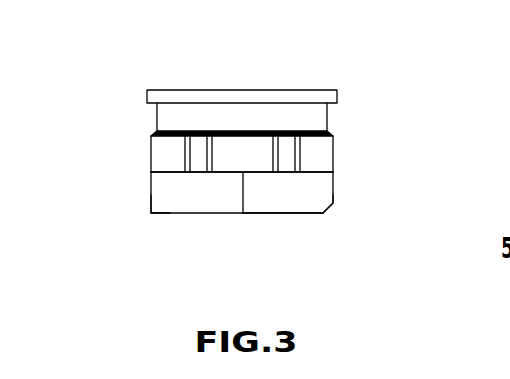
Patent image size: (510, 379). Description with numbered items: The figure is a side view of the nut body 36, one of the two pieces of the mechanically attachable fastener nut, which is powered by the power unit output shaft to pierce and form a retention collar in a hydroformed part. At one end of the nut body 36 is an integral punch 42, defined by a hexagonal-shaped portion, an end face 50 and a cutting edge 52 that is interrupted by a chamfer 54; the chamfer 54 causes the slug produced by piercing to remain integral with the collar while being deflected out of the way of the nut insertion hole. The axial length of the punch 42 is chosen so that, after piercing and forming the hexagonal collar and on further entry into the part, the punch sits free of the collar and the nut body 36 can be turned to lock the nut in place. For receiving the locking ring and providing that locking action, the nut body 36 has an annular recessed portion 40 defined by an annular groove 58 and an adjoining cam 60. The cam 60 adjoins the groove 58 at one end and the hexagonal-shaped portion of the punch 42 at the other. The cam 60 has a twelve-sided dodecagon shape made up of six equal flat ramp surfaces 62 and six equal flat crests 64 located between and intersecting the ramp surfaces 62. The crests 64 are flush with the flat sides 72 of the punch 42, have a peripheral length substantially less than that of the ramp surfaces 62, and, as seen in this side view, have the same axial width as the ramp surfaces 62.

The nut body 36 is at (341, 72).
The annular recessed portion 40 is at (141, 113).
The annular groove 58 is at (328, 117).
The cam 60 is at (346, 144).
The flat ramp surfaces 62 is at (245, 150).
The flat crests 64 is at (199, 150).
The integral punch 42 is at (167, 201).
The flat sides 72 is at (199, 195).
The cutting edge 52 is at (151, 214).
The end face 50 is at (275, 214).
The chamfer 54 is at (330, 203).